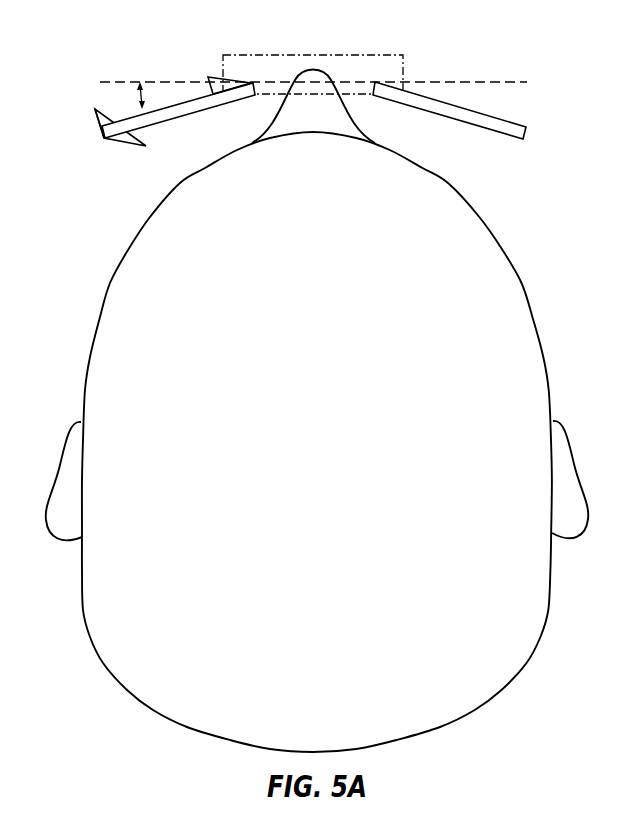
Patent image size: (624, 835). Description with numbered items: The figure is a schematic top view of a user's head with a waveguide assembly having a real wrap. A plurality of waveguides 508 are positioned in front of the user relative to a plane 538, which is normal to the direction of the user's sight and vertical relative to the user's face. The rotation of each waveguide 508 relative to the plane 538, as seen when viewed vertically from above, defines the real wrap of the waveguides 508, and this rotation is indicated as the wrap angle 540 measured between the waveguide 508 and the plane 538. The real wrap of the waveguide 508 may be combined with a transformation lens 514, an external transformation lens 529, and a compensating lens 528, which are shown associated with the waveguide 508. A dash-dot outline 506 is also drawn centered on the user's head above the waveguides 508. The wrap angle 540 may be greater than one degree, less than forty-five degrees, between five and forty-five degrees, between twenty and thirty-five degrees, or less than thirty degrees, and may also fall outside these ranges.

The housing 506 is at (393, 55).
The waveguide 508 is at (104, 137).
The transformation lens 514 is at (211, 77).
The compensating lens 528 is at (120, 143).
The external transformation lens 529 is at (98, 118).
The plane 538 is at (125, 81).
The wrap angle 540 is at (138, 96).